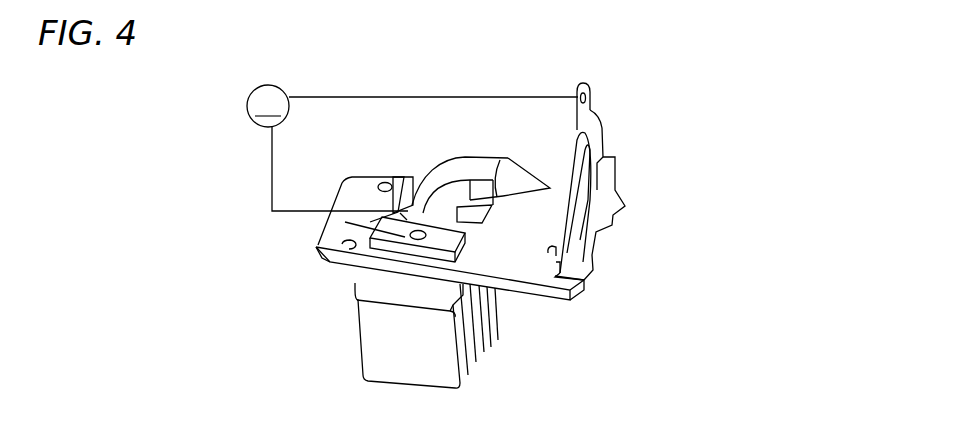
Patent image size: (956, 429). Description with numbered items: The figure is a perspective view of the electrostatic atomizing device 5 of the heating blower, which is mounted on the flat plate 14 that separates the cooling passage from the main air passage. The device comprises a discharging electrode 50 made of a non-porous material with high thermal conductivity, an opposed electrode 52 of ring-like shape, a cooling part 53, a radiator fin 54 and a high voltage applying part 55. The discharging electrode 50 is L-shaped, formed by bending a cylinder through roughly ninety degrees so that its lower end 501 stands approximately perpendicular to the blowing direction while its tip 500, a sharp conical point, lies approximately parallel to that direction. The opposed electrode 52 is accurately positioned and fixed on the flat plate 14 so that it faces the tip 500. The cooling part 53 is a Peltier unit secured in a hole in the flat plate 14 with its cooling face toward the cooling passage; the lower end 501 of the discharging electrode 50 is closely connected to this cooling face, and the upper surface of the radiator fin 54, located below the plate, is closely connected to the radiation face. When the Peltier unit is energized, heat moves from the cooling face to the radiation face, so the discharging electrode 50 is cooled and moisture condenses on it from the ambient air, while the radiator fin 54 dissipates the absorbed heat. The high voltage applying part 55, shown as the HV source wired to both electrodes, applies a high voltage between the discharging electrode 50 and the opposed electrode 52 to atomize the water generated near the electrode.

The electrostatic atomizing device 5 is at (537, 86).
The flat plate 14 is at (535, 283).
The discharging electrode 50 is at (457, 173).
The tip 500 is at (536, 162).
The lower end 501 is at (428, 218).
The opposed electrode 52 is at (598, 135).
The cooling part 53 is at (330, 261).
The radiator fin 54 is at (387, 347).
The high voltage applying part 55 is at (254, 89).